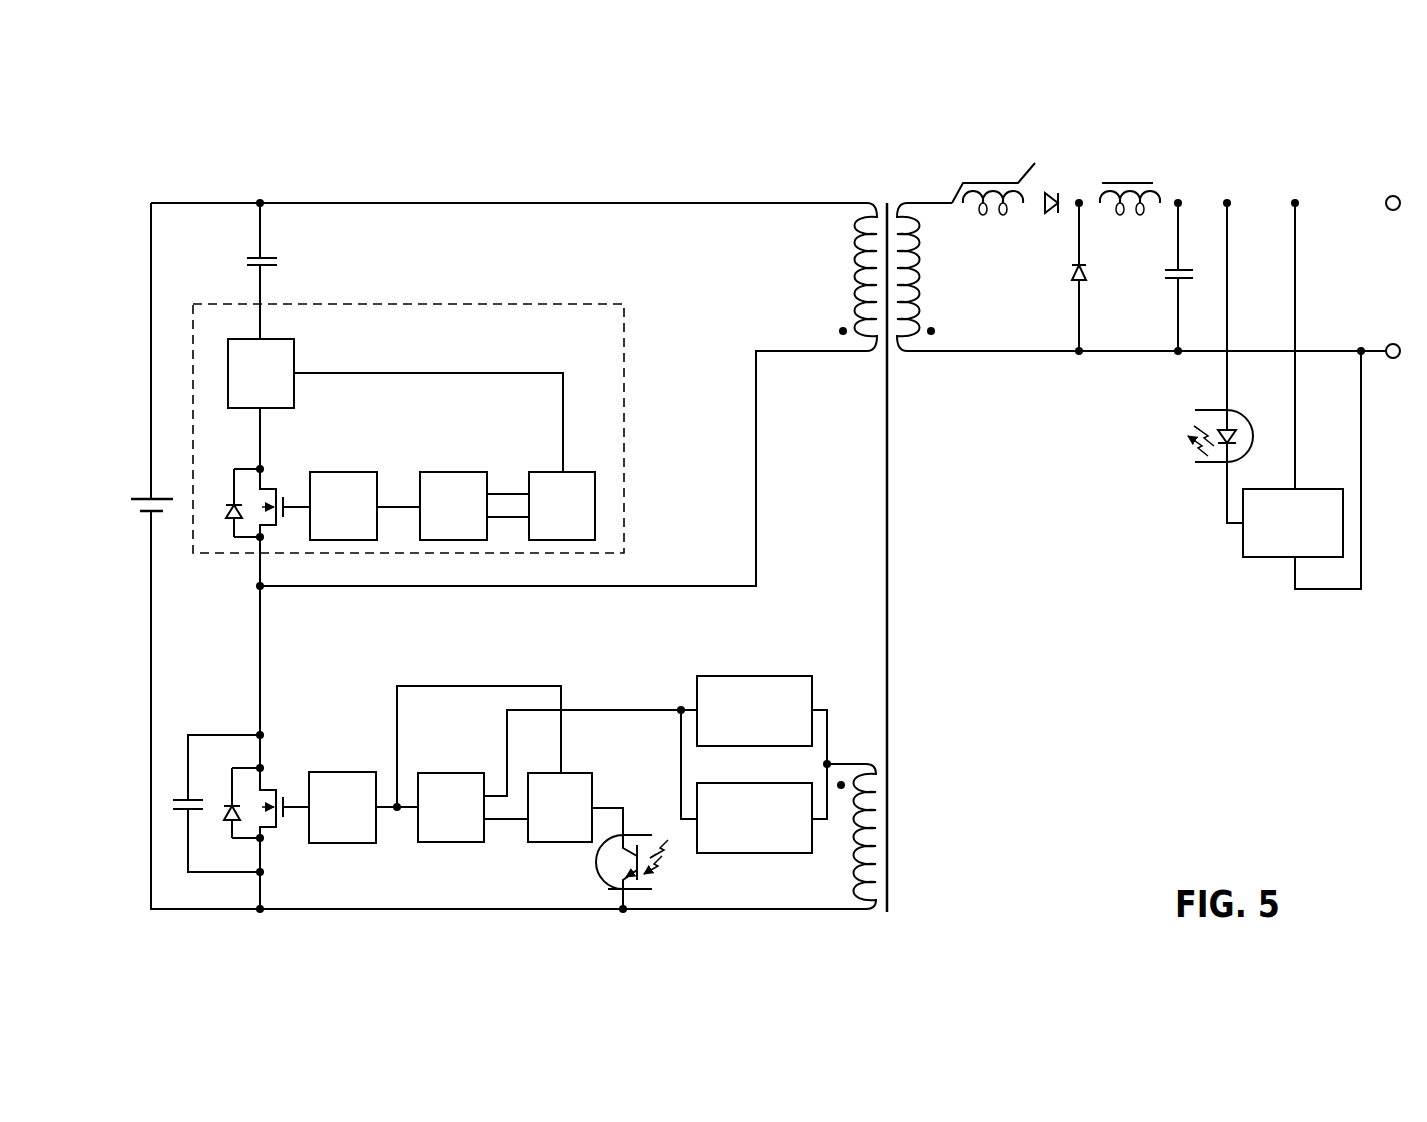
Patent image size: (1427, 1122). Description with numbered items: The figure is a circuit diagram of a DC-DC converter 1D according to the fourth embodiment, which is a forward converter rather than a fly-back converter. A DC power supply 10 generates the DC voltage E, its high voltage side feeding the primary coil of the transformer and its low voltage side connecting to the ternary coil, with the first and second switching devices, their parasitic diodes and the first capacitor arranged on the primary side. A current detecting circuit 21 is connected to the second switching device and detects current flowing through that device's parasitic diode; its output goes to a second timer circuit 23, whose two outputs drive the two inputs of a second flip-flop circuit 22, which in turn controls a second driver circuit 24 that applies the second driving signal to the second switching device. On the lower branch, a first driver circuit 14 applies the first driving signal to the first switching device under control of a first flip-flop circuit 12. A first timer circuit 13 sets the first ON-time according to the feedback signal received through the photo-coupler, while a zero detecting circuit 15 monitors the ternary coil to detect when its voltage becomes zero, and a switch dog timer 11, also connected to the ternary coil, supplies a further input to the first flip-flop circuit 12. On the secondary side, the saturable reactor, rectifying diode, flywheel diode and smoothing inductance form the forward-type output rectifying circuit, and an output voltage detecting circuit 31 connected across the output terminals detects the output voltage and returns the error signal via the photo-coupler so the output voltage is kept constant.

The DC-DC converter 1D is at (468, 157).
The DC power supply 10 is at (155, 512).
The current detecting circuit 21 is at (281, 339).
The second flip-flop circuit 22 is at (450, 472).
The second timer circuit 23 is at (575, 472).
The second driver circuit 24 is at (343, 472).
The first driver circuit 14 is at (341, 772).
The first flip-flop circuit 12 is at (447, 773).
The first timer circuit 13 is at (575, 773).
The zero detecting circuit 15 is at (775, 676).
The switch dog timer 11 is at (775, 783).
The output voltage detecting circuit 31 is at (1310, 489).